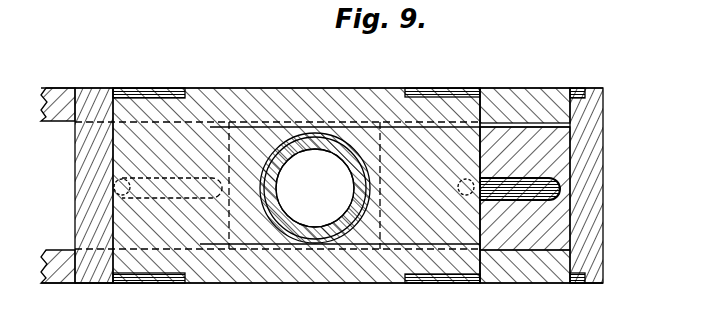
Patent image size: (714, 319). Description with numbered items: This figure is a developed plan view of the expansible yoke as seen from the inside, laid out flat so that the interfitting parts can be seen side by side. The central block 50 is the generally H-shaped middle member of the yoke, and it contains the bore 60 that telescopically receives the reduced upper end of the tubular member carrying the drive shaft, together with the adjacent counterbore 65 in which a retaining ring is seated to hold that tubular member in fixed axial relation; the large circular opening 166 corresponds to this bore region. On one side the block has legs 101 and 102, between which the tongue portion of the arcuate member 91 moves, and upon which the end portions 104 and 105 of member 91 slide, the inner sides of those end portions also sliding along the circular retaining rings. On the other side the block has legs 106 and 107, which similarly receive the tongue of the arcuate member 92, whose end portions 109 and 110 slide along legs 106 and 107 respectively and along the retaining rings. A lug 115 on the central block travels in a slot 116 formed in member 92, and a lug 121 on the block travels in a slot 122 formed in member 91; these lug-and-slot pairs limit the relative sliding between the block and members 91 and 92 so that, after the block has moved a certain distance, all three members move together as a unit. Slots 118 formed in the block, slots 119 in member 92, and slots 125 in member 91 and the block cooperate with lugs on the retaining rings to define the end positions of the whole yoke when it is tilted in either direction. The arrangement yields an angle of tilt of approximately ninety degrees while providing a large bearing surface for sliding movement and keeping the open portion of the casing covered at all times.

The main body block 50 is at (345, 86).
The bore 60 is at (287, 158).
The counterbore 65 is at (267, 195).
The arcuate member 91 is at (73, 187).
The arcuate member 92 is at (552, 188).
The leg 101 is at (50, 250).
The leg 102 is at (60, 88).
The end portion 104 is at (100, 273).
The end portion 105 is at (94, 97).
The leg 106 is at (534, 283).
The leg 107 is at (531, 95).
The end portion 109 is at (604, 276).
The end portion 110 is at (586, 118).
The lug 115 is at (507, 95).
The slot 116 is at (568, 168).
The slots 118 is at (159, 92).
The slots 119 is at (577, 90).
The lug 121 is at (126, 170).
The slot 122 is at (205, 95).
The slots 125 is at (456, 90).
The bore 166 is at (298, 227).